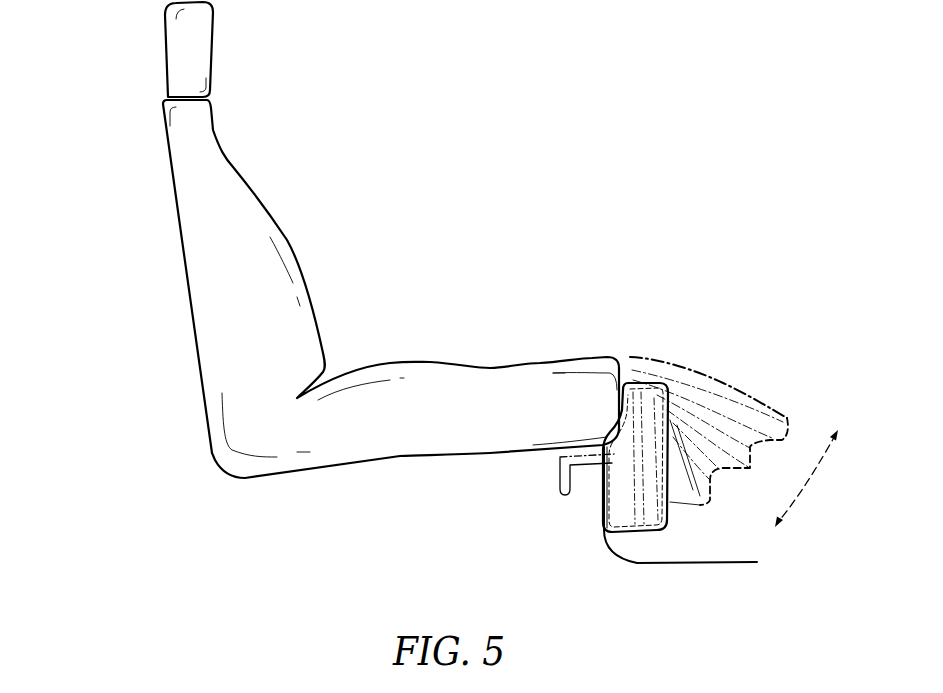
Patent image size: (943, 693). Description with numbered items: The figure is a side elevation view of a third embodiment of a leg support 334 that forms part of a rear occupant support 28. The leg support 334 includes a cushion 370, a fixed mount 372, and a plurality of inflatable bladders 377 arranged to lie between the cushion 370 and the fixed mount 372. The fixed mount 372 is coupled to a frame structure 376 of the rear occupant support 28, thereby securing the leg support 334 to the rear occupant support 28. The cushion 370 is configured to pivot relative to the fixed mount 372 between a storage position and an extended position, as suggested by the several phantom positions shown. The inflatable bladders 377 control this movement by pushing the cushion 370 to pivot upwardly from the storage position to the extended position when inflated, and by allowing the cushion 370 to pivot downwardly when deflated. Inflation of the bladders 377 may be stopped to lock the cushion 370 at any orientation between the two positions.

The rear occupant support 28 is at (108, 131).
The leg support 334 is at (724, 348).
The cushion 370 is at (648, 515).
The fixed mount 372 is at (558, 476).
The frame structure 376 is at (602, 535).
The plurality of inflatable bladders 377 is at (703, 498).